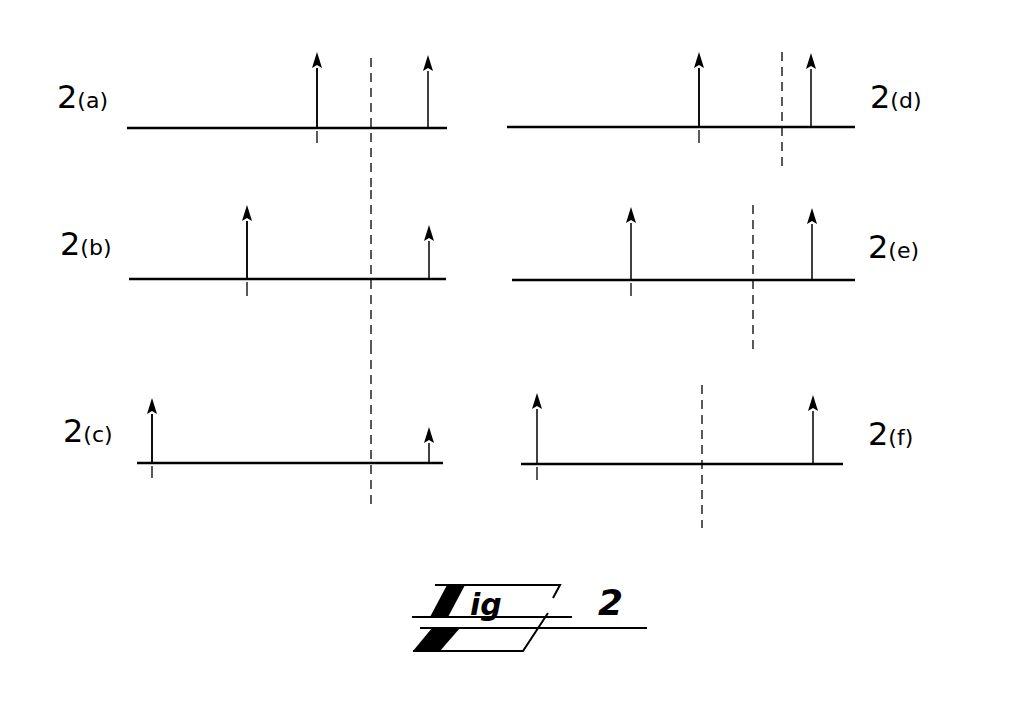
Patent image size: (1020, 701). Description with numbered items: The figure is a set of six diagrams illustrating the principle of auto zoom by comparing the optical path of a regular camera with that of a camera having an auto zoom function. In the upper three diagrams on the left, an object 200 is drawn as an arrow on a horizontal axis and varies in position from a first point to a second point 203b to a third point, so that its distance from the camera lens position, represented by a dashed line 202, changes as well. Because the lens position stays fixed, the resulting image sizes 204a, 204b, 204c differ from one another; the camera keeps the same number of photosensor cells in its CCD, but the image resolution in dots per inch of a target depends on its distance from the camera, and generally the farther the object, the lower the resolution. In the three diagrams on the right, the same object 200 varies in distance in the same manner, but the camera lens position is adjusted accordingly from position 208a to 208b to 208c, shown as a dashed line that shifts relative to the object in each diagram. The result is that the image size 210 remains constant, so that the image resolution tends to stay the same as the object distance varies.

In FIG. 2b, the object 200 is at (247, 252).
The dashed line 202 is at (372, 175).
In FIG. 2b, the point 203b is at (242, 266).
In FIG. 2e, the point 203b is at (631, 267).
The image size 204a is at (428, 88).
In FIG. 2b, the image size 204b is at (429, 260).
The image size 204c is at (430, 450).
The camera lens position 208a is at (781, 98).
In FIG. 2e, the camera lens position 208b is at (752, 225).
The camera lens position 208c is at (700, 432).
The image size 210 is at (811, 87).